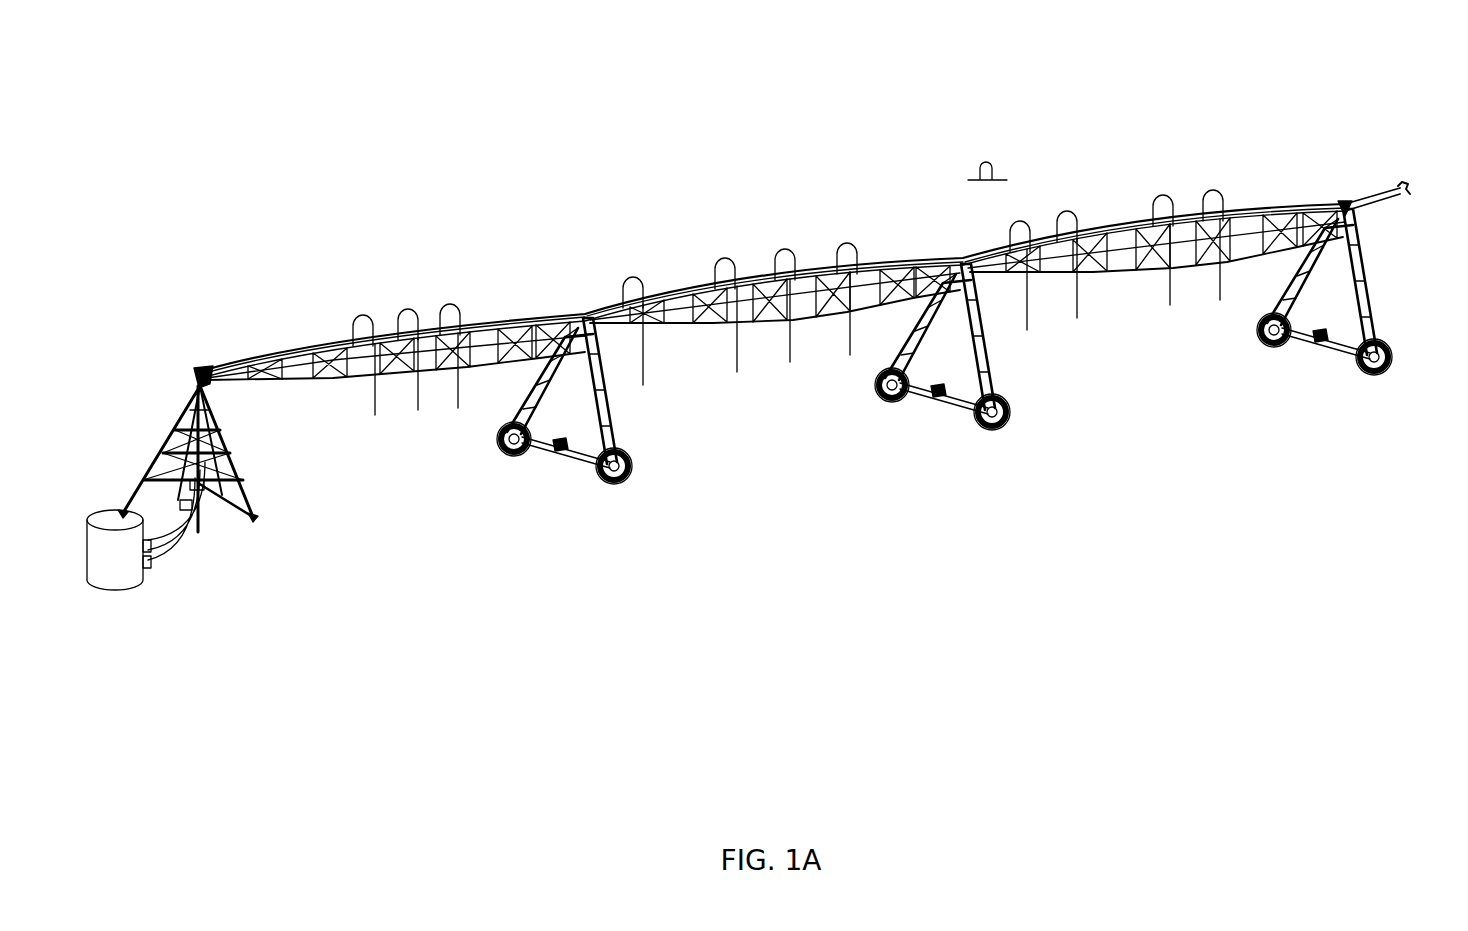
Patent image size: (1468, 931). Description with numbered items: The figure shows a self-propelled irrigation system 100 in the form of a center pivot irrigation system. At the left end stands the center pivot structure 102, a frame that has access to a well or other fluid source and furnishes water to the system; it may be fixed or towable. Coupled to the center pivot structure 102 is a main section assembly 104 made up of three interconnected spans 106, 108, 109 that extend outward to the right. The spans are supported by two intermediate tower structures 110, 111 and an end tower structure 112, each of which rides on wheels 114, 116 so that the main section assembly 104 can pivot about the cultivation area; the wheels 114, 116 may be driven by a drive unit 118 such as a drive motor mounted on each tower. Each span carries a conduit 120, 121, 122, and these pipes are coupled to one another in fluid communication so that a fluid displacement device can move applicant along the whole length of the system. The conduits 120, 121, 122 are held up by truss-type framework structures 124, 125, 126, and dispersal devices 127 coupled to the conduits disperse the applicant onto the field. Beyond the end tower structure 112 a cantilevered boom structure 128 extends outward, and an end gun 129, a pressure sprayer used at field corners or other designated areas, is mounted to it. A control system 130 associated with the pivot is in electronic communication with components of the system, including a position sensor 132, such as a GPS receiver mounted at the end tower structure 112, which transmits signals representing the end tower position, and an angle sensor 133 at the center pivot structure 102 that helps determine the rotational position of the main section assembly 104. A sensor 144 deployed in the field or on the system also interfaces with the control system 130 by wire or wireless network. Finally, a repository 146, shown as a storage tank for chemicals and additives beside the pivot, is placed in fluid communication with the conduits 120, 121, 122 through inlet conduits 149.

The irrigation system 100 is at (610, 100).
The center pivot structure 102 is at (163, 444).
The main section assembly 104 is at (340, 247).
The span 106 is at (482, 322).
The span 108 is at (829, 269).
The span 109 is at (1183, 214).
The tower structure 110 is at (535, 402).
The tower structure 111 is at (885, 352).
The end tower structure 112 is at (1262, 307).
The wheel 114 is at (625, 488).
The wheel 116 is at (507, 460).
The drive unit 118 is at (568, 442).
The conduit 120 is at (347, 332).
The conduit 121 is at (690, 298).
The conduit 122 is at (1118, 240).
The truss-type framework structure 124 is at (372, 402).
The truss-type framework structure 125 is at (765, 374).
The truss-type framework structure 126 is at (1143, 285).
The dispersal device 127 is at (462, 410).
The cantilevered boom structure 128 is at (1383, 208).
The end gun 129 is at (1408, 190).
The control system 130 is at (234, 499).
The position sensor 132 is at (1342, 200).
The angle sensor 133 is at (203, 370).
The sensor 144 is at (995, 163).
The repository 146 is at (97, 600).
The inlet conduit 149 is at (128, 504).